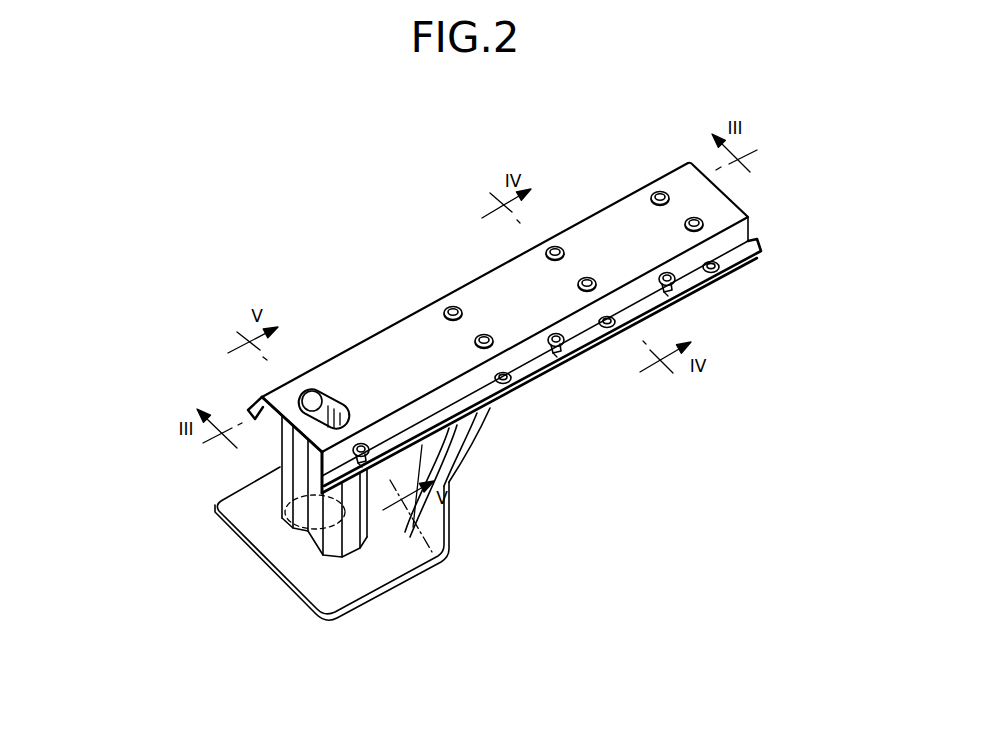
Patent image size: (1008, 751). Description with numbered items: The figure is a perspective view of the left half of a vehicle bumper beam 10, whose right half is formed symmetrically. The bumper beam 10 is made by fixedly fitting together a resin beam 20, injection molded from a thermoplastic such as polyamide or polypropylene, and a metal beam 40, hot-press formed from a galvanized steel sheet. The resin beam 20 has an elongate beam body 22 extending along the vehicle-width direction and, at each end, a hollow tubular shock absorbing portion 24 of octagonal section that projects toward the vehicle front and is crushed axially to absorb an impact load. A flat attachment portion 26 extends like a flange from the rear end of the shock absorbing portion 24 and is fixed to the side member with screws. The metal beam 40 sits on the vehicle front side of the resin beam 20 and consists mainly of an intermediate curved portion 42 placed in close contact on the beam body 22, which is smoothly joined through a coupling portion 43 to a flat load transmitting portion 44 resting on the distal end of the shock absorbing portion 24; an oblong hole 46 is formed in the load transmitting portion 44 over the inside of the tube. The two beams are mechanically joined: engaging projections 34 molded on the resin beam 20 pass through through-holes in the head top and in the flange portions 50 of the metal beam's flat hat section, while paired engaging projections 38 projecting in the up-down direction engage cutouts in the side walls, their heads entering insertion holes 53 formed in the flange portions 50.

The bumper beam 10 is at (373, 220).
The resin beam 20 is at (430, 623).
The beam body 22 is at (619, 405).
The shock absorbing portion 24 is at (283, 478).
The attachment portion 26 is at (298, 562).
The engaging projection 34 is at (555, 248).
The engaging projection 38 is at (672, 284).
The metal beam 40 is at (610, 165).
The intermediate curved portion 42 is at (505, 265).
The coupling portion 43 is at (364, 362).
The load transmitting portion 44 is at (287, 397).
The oblong hole 46 is at (309, 390).
The flange portion 50 is at (481, 413).
The insertion hole 53 is at (561, 350).